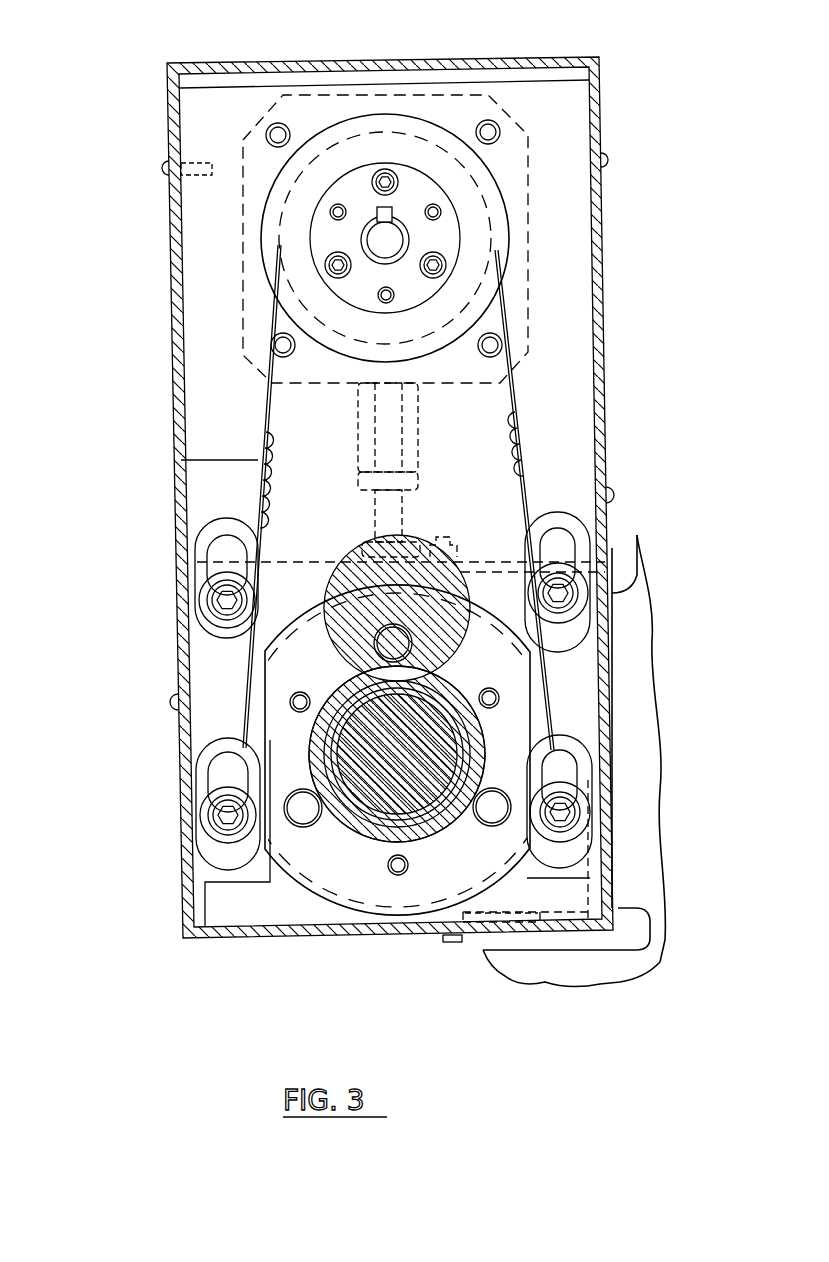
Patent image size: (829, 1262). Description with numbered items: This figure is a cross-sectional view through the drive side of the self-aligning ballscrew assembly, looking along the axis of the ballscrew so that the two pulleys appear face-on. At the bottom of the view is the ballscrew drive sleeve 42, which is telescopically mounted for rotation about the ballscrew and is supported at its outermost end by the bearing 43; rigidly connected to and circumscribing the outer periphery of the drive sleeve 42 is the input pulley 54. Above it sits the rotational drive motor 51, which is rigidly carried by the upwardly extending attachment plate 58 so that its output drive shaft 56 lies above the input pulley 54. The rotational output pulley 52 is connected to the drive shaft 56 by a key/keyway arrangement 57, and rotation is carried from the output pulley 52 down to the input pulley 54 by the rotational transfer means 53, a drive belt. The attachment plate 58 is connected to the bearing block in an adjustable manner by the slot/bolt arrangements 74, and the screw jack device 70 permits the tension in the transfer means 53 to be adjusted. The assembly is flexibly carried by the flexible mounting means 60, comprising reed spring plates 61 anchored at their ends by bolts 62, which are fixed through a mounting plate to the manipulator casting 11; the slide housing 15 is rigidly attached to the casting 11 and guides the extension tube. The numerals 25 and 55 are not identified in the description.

The manipulator casting 11 is at (657, 907).
The slide housing 15 is at (527, 972).
The housing 25 is at (172, 330).
The ballscrew drive sleeve 42 is at (368, 835).
The bearing 43 is at (383, 823).
The rotational drive motor 51 is at (318, 106).
The rotational output pulley 52 is at (435, 162).
The rotational transfer means 53 is at (262, 452).
The input pulley 54 is at (337, 888).
The bolt hole 55 is at (303, 818).
The output drive shaft 56 is at (400, 216).
The key/keyway arrangement 57 is at (378, 212).
The attachment plate 58 is at (205, 660).
The flexible mounting means 60 is at (487, 536).
The reed spring plates 61 is at (482, 935).
The bolts 62 is at (446, 942).
The screw jack device 70 is at (410, 420).
The slot/bolt arrangements 74 is at (196, 590).